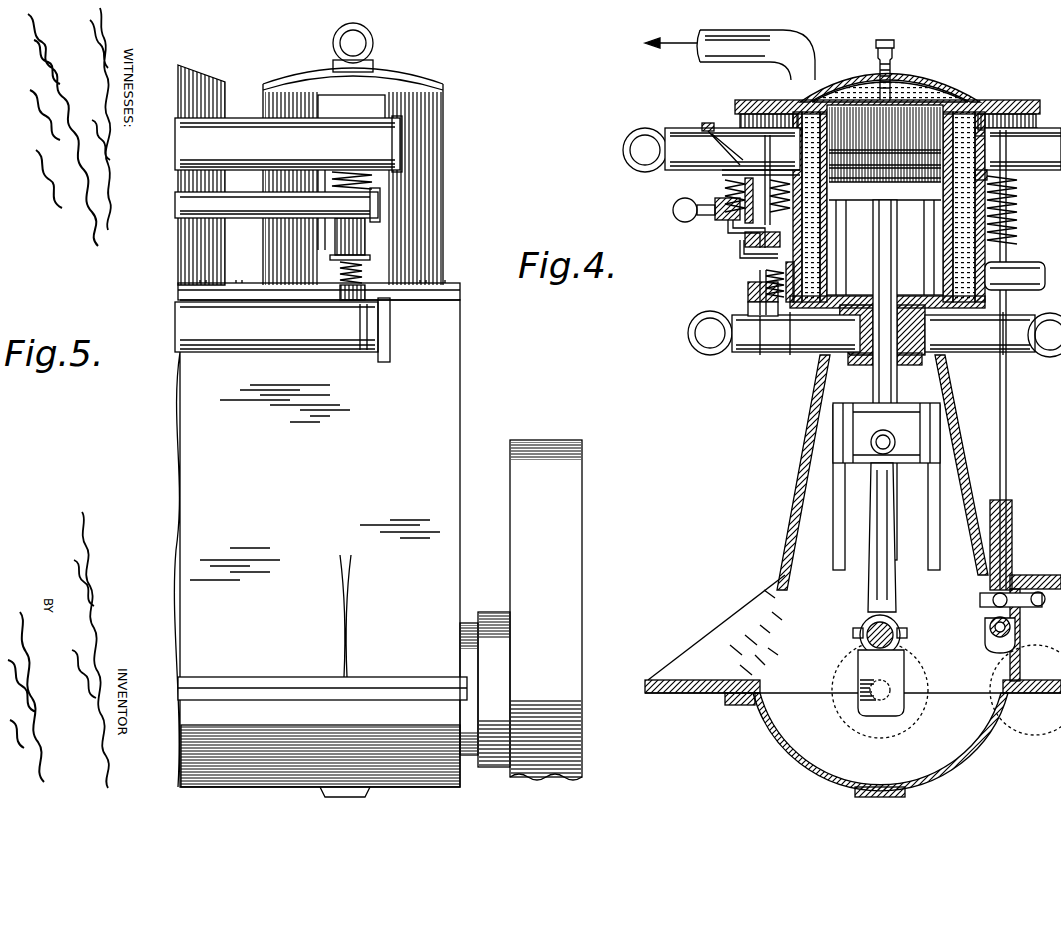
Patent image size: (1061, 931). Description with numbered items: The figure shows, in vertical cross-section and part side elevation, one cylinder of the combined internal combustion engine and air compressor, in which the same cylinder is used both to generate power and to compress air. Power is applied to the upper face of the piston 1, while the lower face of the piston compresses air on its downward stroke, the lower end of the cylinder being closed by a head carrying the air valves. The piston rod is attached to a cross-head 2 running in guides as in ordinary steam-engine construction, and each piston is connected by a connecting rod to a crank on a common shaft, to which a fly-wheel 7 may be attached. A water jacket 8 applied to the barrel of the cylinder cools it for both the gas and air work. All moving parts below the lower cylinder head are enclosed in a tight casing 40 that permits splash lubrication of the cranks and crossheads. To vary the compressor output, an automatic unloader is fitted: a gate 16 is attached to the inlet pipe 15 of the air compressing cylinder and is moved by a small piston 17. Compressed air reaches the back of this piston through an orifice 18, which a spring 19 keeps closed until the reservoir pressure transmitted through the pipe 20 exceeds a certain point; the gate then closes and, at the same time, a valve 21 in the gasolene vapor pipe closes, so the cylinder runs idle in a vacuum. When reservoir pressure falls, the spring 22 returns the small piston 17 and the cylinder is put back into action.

In FIG. 4, the piston 1 is at (908, 185).
In FIG. 4, the cross-head 2 is at (892, 418).
In FIG. 5, the fly-wheel 7 is at (521, 610).
In FIG. 4, the water jacket 8 is at (985, 232).
In FIG. 5, the inlet pipe 15 is at (282, 330).
In FIG. 4, the inlet pipe 15 is at (874, 334).
In FIG. 5, the gate 16 is at (363, 290).
In FIG. 4, the gate 16 is at (748, 302).
In FIG. 4, the small piston 17 is at (784, 282).
In FIG. 4, the orifice 18 is at (746, 236).
In FIG. 4, the spring 19 is at (723, 192).
In FIG. 5, the pipe 20 is at (249, 219).
In FIG. 4, the pipe 20 is at (705, 218).
In FIG. 4, the valve 21 is at (700, 138).
In FIG. 4, the spring 22 is at (756, 268).
In FIG. 5, the tight casing 40 is at (320, 548).
In FIG. 4, the tight casing 40 is at (853, 576).